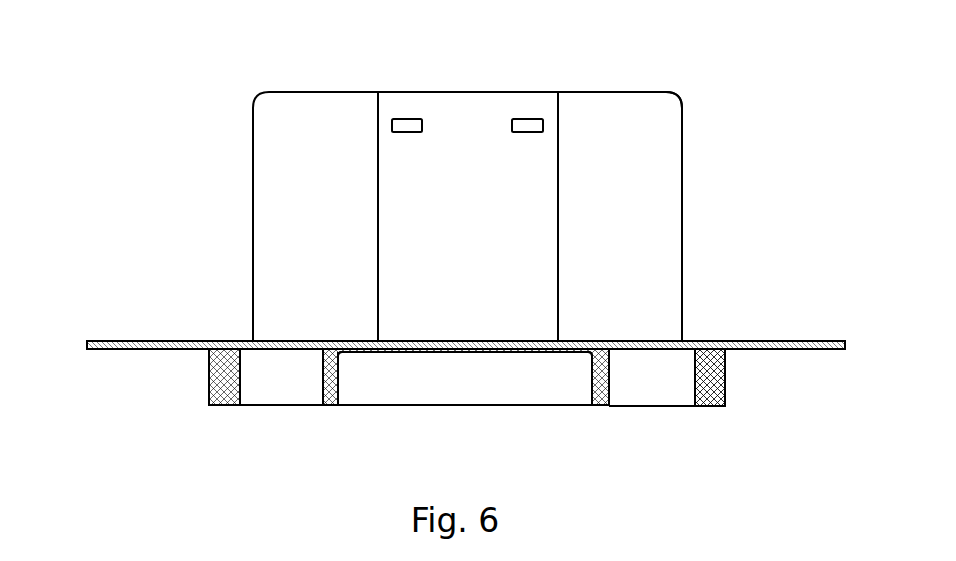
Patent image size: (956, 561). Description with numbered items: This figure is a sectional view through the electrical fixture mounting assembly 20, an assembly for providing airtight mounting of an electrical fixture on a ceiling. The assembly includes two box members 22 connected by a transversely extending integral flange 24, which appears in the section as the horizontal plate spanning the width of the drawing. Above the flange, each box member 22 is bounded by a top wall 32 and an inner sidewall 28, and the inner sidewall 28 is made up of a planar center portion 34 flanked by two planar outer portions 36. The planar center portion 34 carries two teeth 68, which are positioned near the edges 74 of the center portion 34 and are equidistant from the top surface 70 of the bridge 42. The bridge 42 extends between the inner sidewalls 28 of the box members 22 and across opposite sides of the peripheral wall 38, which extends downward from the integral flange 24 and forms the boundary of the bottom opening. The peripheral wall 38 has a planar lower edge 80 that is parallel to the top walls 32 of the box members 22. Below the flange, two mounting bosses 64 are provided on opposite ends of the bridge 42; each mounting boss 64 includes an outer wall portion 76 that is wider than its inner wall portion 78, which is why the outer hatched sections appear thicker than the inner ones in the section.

The electrical fixture mounting assembly 20 is at (165, 160).
The box member 22 is at (682, 125).
The integral flange 24 is at (783, 342).
The inner sidewall 28 is at (660, 150).
The top wall 32 is at (473, 92).
The planar center portion 34 is at (465, 221).
The planar outer portion 36 is at (305, 221).
The peripheral wall 38 is at (462, 391).
The bridge 42 is at (470, 347).
The mounting boss 64 is at (287, 405).
The tooth 68 is at (407, 119).
The top surface 70 is at (408, 340).
The edge 74 is at (378, 200).
The outer wall portion 76 is at (708, 373).
The inner wall portion 78 is at (335, 382).
The planar lower edge 80 is at (467, 405).